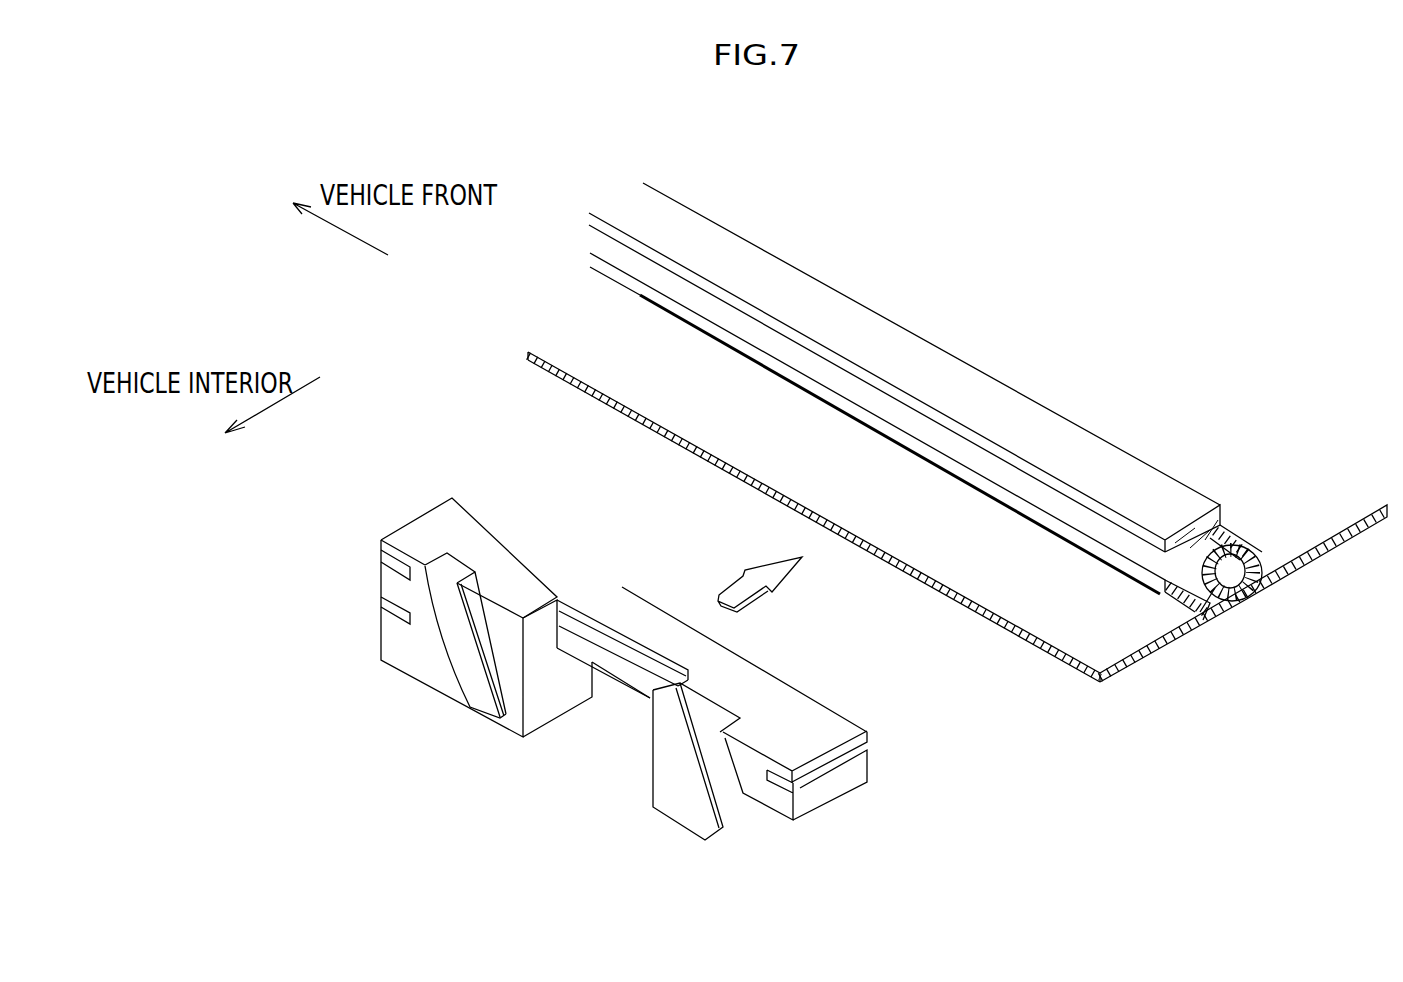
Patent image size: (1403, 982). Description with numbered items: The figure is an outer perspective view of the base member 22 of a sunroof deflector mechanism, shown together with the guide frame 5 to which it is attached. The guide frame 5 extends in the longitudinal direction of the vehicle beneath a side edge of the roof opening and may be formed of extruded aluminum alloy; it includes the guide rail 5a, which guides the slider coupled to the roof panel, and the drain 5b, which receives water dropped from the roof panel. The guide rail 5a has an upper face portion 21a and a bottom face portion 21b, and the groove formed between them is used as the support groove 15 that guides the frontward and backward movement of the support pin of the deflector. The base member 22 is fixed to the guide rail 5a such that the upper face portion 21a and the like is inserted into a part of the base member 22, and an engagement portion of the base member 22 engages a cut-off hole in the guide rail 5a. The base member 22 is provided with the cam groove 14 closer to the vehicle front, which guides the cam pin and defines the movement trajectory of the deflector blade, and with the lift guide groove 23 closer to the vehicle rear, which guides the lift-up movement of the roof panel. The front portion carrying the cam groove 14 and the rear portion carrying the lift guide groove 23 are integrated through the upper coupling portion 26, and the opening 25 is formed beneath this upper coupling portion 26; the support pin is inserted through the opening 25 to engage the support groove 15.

The guide frame 5 is at (998, 395).
The guide rail 5a is at (1129, 636).
The drain 5b is at (1305, 543).
The cam groove 14 is at (458, 637).
The support groove 15 is at (992, 532).
The upper face portion 21a is at (1200, 615).
The bottom face portion 21b is at (1184, 638).
The base member 22 is at (517, 552).
The lift guide groove 23 is at (705, 793).
The opening 25 is at (611, 732).
The upper coupling portion 26 is at (608, 662).